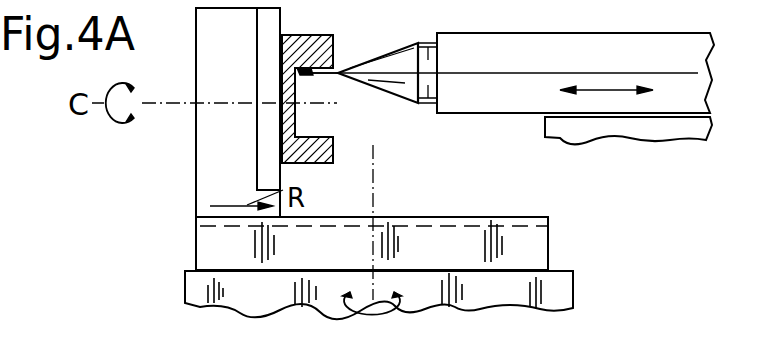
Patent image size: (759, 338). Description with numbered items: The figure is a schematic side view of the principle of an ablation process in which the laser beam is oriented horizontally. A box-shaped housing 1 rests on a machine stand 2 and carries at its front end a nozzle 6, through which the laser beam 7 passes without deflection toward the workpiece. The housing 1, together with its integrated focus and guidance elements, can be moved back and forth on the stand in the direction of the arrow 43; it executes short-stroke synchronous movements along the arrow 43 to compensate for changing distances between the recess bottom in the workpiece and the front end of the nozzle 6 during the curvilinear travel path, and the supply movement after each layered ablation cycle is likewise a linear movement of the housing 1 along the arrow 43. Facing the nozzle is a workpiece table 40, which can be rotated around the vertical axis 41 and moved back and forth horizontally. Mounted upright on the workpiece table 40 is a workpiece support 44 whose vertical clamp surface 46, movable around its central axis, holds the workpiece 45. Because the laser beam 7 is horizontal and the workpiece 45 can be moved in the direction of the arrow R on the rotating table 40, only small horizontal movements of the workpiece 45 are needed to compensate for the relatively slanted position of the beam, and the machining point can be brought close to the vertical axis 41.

The box-shaped housing 1 is at (548, 47).
The machine stand 2 is at (677, 127).
The nozzle 6 is at (390, 60).
The laser beam 7 is at (465, 73).
The workpiece table 40 is at (222, 245).
The vertical axis 41 is at (373, 166).
The arrow 43 is at (588, 90).
The workpiece support 44 is at (220, 125).
The workpiece 45 is at (327, 40).
The vertical clamp surface 46 is at (272, 25).